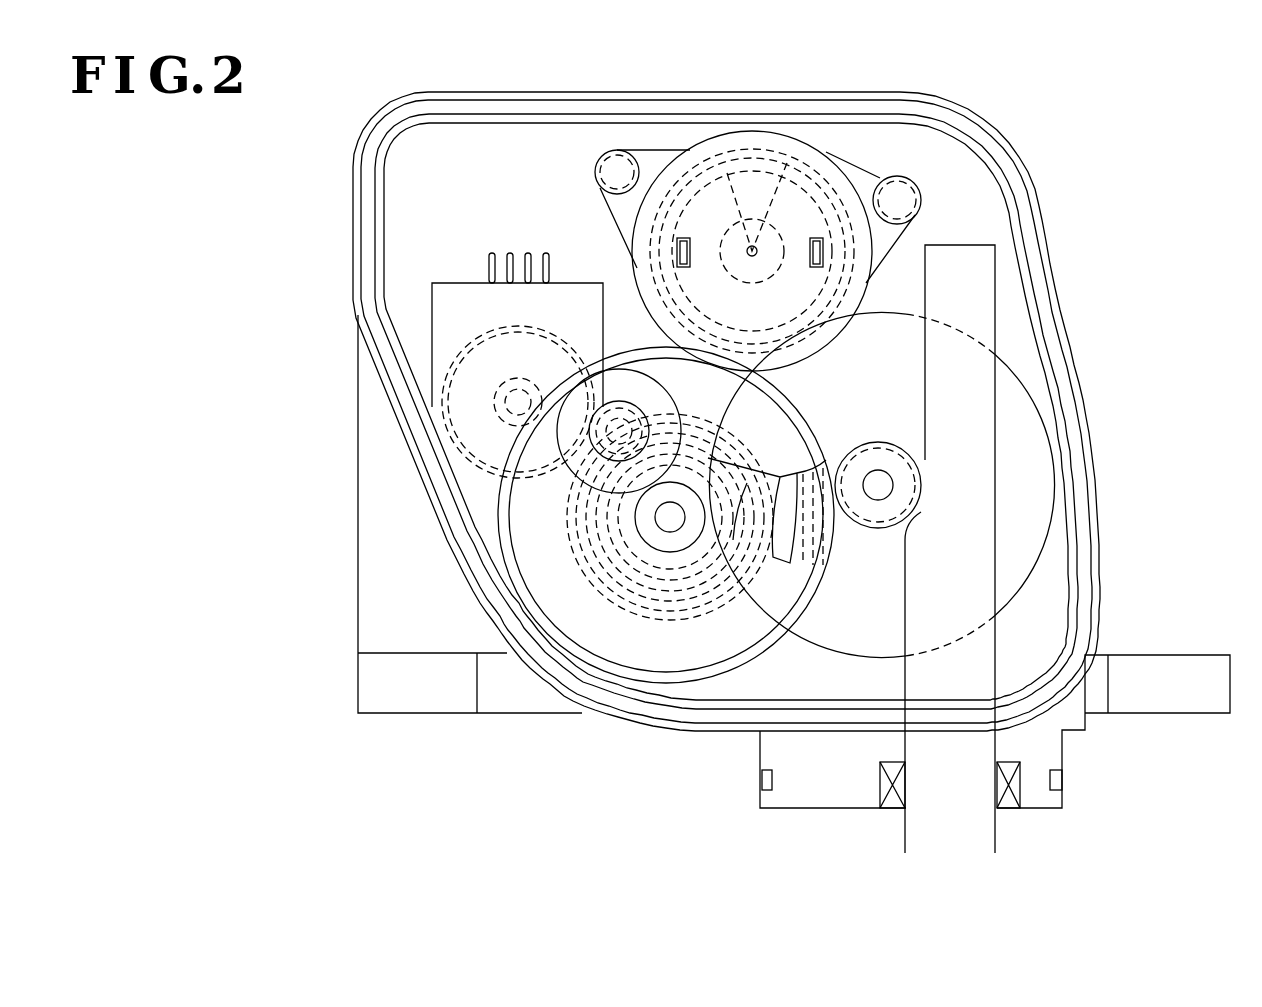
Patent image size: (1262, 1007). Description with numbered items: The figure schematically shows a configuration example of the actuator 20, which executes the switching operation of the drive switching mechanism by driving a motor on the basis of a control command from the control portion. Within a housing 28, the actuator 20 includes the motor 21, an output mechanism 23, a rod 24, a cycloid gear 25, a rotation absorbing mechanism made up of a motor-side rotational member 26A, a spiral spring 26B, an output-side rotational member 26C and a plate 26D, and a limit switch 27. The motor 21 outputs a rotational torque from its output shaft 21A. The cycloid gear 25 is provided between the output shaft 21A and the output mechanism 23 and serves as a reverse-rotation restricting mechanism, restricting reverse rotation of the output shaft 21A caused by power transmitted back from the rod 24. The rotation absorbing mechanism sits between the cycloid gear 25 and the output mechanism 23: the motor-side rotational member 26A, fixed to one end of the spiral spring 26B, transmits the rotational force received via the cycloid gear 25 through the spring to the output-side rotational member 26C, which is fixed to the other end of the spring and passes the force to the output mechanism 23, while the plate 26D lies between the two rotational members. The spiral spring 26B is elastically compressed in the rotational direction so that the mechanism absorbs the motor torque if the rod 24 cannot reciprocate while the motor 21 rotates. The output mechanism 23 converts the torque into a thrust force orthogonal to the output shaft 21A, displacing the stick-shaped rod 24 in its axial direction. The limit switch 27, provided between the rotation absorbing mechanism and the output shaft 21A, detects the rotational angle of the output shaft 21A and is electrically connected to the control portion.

The actuator 20 is at (1176, 81).
The motor 21 is at (750, 145).
The output shaft 21A is at (705, 150).
The output mechanism 23 is at (1028, 472).
The rod 24 is at (977, 835).
The cycloid gear 25 is at (797, 167).
The motor-side rotational member 26A is at (650, 678).
The spiral spring 26B is at (547, 660).
The output-side rotational member 26C is at (722, 612).
The plate 26D is at (785, 448).
The limit switch 27 is at (450, 322).
The housing 28 is at (1040, 198).